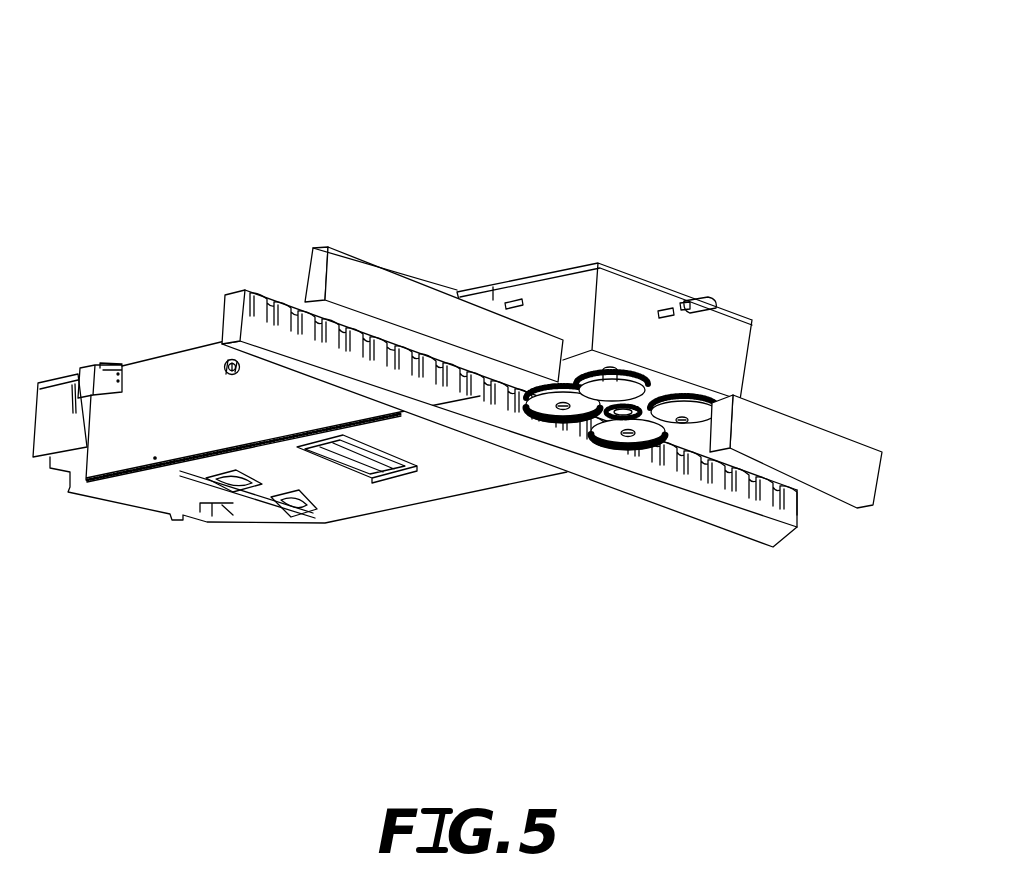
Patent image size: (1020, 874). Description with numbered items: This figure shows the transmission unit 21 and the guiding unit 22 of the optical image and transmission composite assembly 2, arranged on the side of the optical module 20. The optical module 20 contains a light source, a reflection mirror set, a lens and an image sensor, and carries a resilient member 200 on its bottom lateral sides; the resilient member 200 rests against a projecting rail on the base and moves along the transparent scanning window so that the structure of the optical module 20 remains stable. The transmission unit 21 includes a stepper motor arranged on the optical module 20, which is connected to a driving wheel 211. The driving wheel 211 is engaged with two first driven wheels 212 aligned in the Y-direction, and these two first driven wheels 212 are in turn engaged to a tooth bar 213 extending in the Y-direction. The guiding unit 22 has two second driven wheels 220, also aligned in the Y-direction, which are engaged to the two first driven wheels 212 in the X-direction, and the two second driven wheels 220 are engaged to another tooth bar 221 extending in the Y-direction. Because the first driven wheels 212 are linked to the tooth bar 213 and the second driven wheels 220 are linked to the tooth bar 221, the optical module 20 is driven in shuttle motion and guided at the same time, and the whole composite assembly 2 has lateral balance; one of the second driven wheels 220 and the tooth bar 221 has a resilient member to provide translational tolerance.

The optical image and transmission composite assembly 2 is at (506, 97).
The optical module 20 is at (145, 368).
The resilient member 200 is at (291, 516).
The transmission unit 21 is at (547, 558).
The driving wheel 211 is at (645, 428).
The first driven wheels 212 is at (620, 445).
The tooth bar 213 is at (742, 526).
The guiding unit 22 is at (780, 327).
The second driven wheels 220 is at (703, 407).
The tooth bar 221 is at (850, 448).